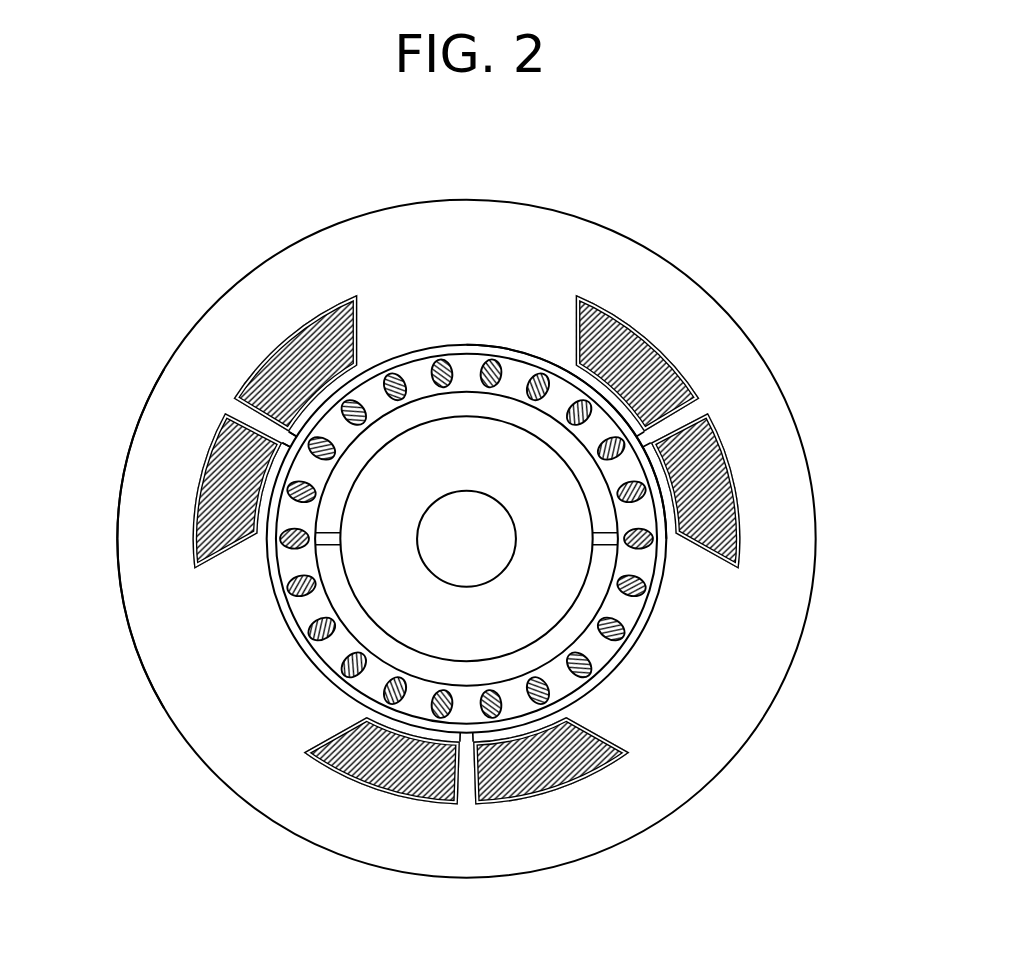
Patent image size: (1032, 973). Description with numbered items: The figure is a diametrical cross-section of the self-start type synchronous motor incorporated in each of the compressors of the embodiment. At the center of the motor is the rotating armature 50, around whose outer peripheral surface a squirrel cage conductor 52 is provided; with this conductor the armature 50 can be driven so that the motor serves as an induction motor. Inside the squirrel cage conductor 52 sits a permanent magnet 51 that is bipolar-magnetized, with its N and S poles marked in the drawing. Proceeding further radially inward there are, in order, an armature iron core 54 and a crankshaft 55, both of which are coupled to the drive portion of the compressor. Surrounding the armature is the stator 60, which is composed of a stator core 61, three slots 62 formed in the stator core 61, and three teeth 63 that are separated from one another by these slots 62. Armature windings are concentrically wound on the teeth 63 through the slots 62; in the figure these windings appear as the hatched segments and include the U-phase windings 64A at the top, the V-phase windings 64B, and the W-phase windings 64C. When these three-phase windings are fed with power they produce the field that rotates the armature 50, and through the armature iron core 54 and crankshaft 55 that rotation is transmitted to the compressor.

The armature 50 is at (634, 620).
The permanent magnet 51 is at (568, 446).
The squirrel cage conductor 52 is at (653, 483).
The armature iron core 54 is at (550, 580).
The crankshaft 55 is at (465, 518).
The stator 60 is at (286, 245).
The stator core 61 is at (203, 365).
The slots 62 is at (236, 397).
The teeth 63 is at (213, 600).
The U-phase windings 64A is at (597, 346).
The V-phase windings 64B is at (331, 737).
The W-phase windings 64C is at (722, 532).